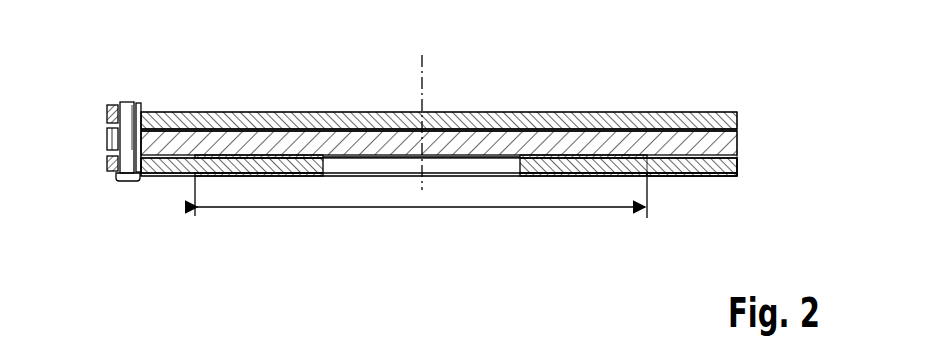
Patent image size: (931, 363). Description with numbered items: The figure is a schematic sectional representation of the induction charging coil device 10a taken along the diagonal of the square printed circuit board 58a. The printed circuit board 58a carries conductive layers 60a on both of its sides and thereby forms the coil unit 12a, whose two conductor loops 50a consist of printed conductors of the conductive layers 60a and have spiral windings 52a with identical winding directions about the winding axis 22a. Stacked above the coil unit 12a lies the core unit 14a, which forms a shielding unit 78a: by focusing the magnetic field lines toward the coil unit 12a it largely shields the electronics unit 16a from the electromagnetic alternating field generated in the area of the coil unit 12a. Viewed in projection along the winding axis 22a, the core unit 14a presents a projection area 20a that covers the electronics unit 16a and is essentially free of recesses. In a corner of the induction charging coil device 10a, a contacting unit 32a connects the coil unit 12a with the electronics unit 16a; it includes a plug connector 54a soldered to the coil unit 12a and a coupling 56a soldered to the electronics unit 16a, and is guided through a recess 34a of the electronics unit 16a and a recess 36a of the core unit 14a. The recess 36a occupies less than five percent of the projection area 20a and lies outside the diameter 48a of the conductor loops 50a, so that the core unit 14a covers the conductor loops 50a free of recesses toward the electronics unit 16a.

The induction charging coil device 10a is at (741, 98).
The coil unit 12a is at (700, 166).
The core unit 14a is at (731, 145).
The shielding unit 78a is at (510, 143).
The electronics unit 16a is at (737, 118).
The projection area 20a is at (559, 128).
The winding axis 22a is at (423, 64).
The contacting unit 32a is at (145, 103).
The recess 34a is at (123, 138).
The recess 36a is at (120, 160).
The diameter 48a is at (420, 208).
The conductor loops 50a is at (605, 143).
The spiral windings 52a is at (431, 211).
The conductive layers 60a is at (431, 211).
The plug connector 54a is at (130, 182).
The coupling 56a is at (119, 104).
The printed circuit board 58a is at (731, 166).